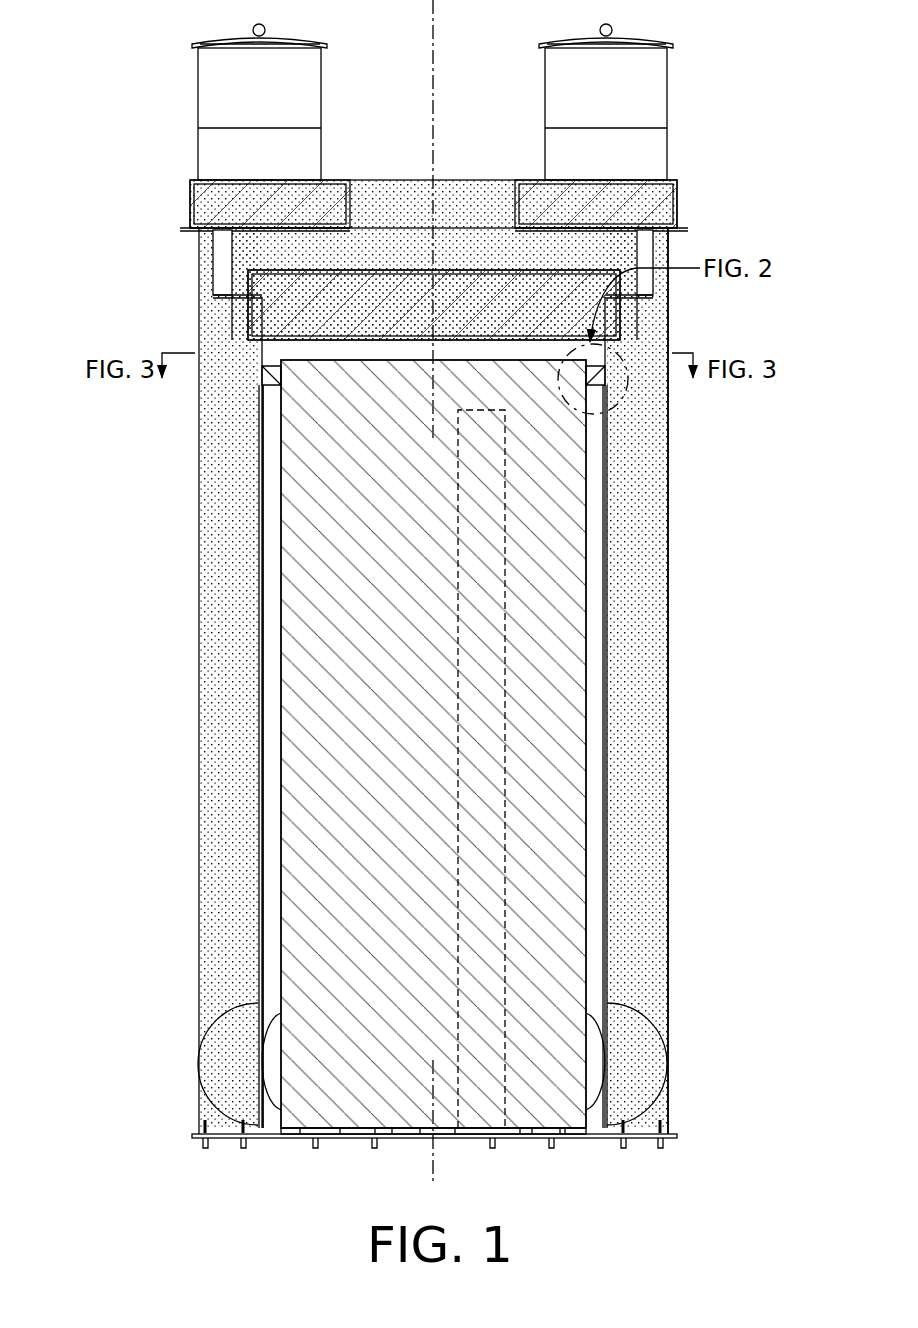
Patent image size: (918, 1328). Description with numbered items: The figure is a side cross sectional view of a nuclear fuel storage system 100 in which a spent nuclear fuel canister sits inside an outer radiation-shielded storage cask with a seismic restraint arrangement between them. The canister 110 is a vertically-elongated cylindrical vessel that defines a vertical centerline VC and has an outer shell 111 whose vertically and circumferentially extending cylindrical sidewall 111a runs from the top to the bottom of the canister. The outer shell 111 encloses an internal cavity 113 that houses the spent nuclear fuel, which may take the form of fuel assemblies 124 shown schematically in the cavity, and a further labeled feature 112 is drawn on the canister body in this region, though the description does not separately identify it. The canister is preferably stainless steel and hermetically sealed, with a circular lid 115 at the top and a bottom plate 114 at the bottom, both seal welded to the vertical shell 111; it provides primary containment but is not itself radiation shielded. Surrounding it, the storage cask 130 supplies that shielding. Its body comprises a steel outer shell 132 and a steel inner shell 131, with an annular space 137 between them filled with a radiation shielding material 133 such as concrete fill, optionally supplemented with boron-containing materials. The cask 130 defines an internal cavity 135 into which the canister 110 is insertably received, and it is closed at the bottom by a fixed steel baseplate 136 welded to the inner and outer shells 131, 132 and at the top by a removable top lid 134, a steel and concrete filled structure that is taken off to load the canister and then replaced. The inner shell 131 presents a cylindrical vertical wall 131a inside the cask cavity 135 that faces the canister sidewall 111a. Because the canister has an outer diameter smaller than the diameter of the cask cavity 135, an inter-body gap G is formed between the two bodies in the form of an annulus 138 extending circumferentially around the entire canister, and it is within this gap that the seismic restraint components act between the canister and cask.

The nuclear fuel storage system 100 is at (358, 592).
The spent fuel canister 110 is at (438, 744).
The outer shell 111 is at (277, 643).
The cylindrical sidewall 111a is at (277, 600).
The vessel interior 112 is at (303, 963).
The internal cavity 113 is at (296, 700).
The bottom plate 114 is at (358, 1137).
The circular lid 115 is at (335, 360).
The fuel assemblies 124 is at (505, 683).
The storage cask 130 is at (605, 740).
The inner shell 131 is at (610, 880).
The cylindrical vertical wall 131a is at (613, 803).
The outer shell 132 is at (668, 980).
The radiation shielding material 133 is at (228, 815).
The top lid 134 is at (595, 245).
The internal cavity 135 is at (268, 481).
The baseplate 136 is at (515, 1137).
The annular space 137 is at (200, 907).
The annulus 138 is at (600, 533).
The inter-body gap G is at (553, 438).
The vertical centerline VC is at (433, 18).